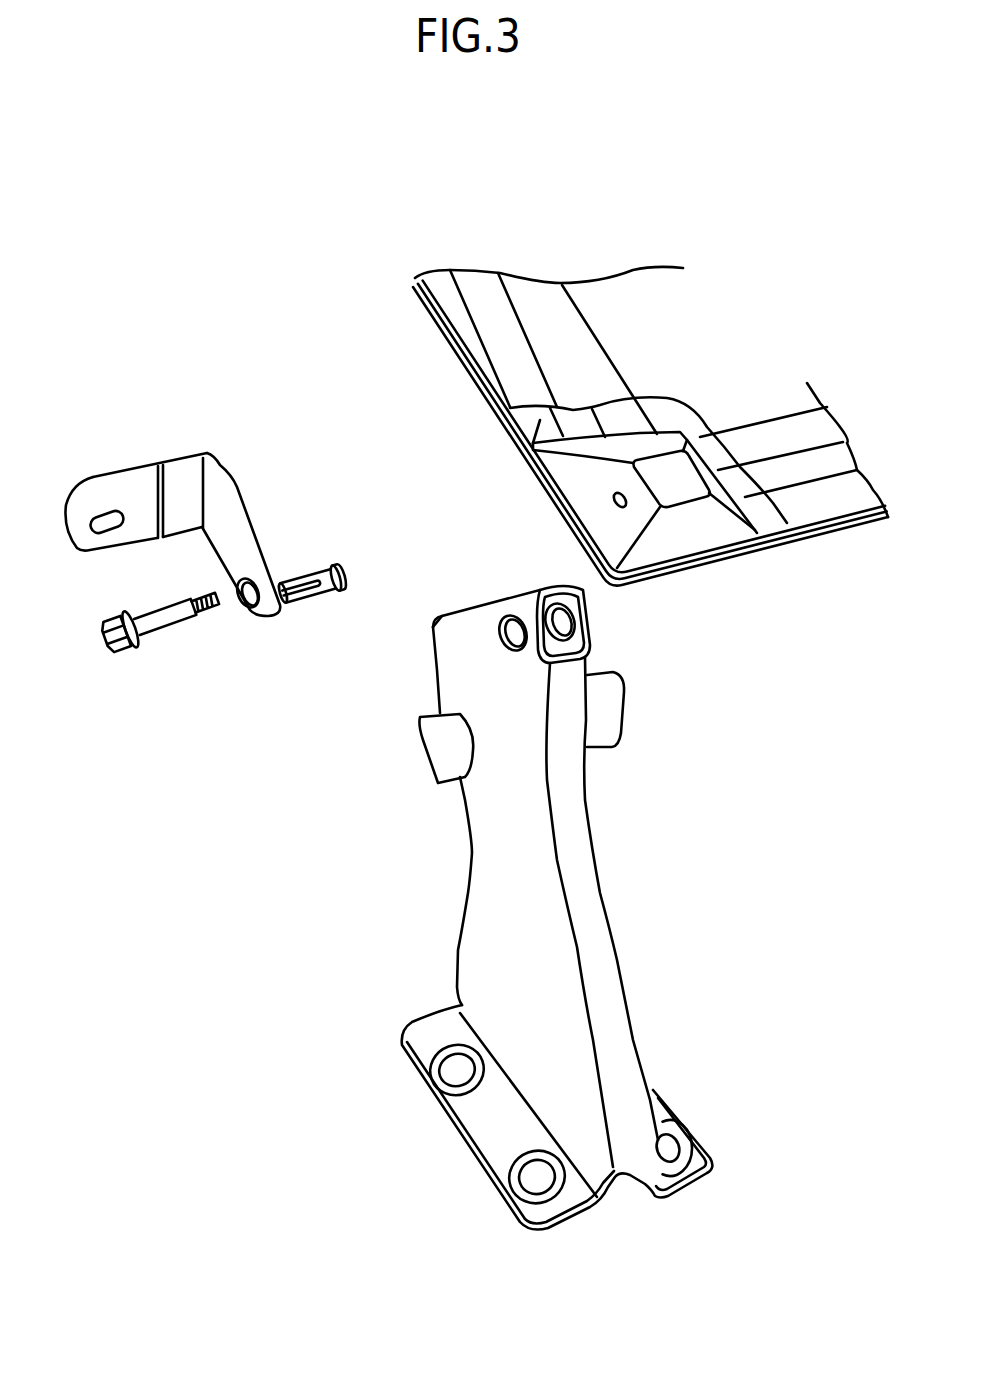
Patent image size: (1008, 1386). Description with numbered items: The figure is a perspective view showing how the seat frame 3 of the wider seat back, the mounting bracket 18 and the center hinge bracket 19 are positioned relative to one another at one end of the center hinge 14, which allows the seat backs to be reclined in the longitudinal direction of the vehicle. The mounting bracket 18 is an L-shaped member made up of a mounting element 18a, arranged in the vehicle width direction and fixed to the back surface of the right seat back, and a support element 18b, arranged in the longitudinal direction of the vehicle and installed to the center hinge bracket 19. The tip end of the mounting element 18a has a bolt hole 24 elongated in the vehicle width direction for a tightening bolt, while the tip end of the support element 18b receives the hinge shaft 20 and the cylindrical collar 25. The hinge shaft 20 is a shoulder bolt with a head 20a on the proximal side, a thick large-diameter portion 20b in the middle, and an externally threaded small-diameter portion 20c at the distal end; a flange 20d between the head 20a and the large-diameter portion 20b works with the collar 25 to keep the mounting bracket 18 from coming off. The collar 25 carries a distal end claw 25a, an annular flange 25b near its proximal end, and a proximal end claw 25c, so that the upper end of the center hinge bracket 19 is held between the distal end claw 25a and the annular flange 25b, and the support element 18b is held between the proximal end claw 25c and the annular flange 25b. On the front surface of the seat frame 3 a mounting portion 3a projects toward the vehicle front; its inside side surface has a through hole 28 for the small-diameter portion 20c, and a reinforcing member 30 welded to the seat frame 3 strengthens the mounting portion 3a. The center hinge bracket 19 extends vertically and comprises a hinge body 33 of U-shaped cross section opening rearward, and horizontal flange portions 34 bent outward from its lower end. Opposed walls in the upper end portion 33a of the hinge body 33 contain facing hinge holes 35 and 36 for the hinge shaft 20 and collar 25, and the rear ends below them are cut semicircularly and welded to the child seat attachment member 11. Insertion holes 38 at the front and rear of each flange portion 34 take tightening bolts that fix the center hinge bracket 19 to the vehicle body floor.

The seat frame 3 is at (650, 457).
The mounting portion 3a is at (563, 472).
The child seat attachment member 11 is at (613, 712).
The center hinge 14 is at (377, 386).
The mounting bracket 18 is at (203, 503).
The mounting element 18a is at (137, 483).
The support element 18b is at (243, 534).
The center hinge bracket 19 is at (545, 895).
The hinge shaft 20 is at (161, 621).
The head 20a is at (108, 627).
The large-diameter portion 20b is at (180, 620).
The small-diameter portion 20c is at (200, 620).
The flange 20d is at (130, 647).
The bolt hole 24 is at (100, 520).
The collar 25 is at (343, 582).
The distal end claw 25a is at (323, 557).
The annular flange 25b is at (280, 607).
The proximal end claw 25c is at (237, 588).
The through hole 28 is at (610, 503).
The reinforcing member 30 is at (687, 497).
The hinge body 33 is at (483, 873).
The upper end portion 33a is at (457, 630).
The flange portion 34 is at (477, 1130).
The hinge hole 35 is at (567, 623).
The hinge hole 36 is at (510, 627).
The insertion hole 38 is at (447, 1070).